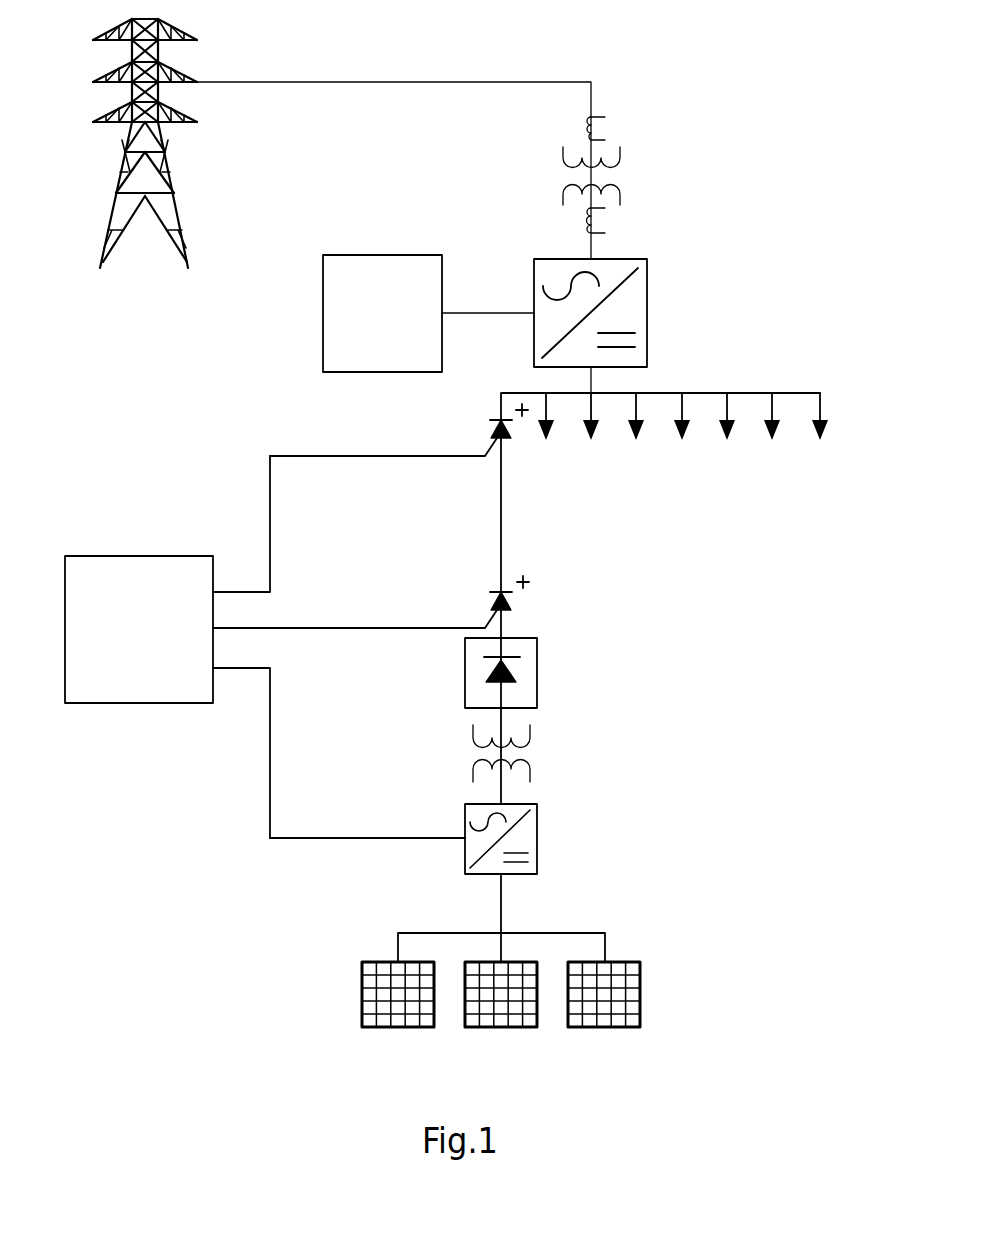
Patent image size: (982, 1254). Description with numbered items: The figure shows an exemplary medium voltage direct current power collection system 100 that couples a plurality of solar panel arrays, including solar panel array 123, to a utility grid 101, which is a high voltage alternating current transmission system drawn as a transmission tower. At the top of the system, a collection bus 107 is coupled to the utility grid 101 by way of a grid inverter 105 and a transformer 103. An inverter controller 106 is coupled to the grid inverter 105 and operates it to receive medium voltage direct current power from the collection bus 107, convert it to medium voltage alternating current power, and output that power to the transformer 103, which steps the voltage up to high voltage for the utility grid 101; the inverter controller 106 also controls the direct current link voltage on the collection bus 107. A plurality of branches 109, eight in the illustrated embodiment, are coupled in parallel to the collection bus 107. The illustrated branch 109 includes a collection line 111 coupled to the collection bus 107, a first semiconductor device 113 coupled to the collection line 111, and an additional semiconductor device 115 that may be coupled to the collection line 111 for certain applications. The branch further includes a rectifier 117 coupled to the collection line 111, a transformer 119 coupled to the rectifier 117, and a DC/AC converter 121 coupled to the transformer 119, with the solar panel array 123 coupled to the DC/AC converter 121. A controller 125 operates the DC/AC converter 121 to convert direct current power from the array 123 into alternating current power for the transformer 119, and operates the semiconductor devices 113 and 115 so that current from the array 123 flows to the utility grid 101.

The medium voltage direct current power collection system 100 is at (776, 965).
The utility grid 101 is at (197, 40).
The transformer 103 is at (620, 153).
The grid inverter 105 is at (647, 272).
The inverter controller 106 is at (428, 313).
The collection bus 107 is at (702, 393).
The branches 109 is at (520, 415).
The collection line 111 is at (501, 526).
The first semiconductor device 113 is at (494, 432).
The additional semiconductor device 115 is at (494, 603).
The rectifier 117 is at (465, 658).
The transformer 119 is at (473, 738).
The DC/AC converter 121 is at (465, 812).
The solar panel array 123 is at (358, 958).
The controller 125 is at (167, 647).